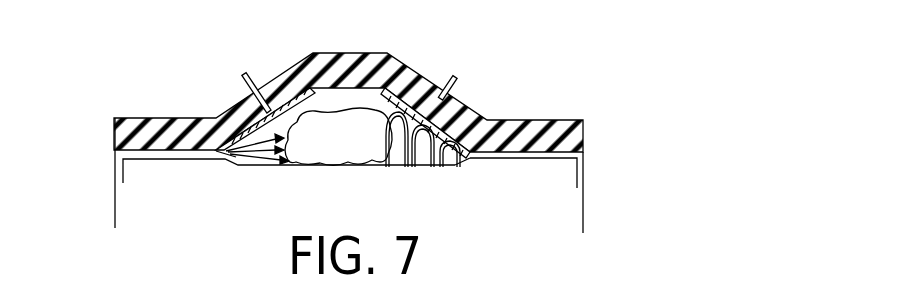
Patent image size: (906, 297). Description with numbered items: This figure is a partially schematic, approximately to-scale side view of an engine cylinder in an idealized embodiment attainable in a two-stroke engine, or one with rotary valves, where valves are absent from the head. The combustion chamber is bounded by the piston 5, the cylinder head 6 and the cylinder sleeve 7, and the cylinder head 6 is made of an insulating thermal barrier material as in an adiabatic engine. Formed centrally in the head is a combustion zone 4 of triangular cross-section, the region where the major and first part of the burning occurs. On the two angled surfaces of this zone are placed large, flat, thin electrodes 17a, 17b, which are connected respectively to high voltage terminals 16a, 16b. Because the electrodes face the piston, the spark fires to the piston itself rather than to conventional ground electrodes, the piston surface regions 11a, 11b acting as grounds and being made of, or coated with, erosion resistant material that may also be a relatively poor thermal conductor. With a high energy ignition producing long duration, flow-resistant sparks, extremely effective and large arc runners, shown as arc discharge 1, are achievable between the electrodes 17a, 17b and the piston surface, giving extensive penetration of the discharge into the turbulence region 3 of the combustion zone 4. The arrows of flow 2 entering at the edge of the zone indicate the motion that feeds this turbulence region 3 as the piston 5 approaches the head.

The arc discharge 1 is at (445, 168).
The combustion flow 2 is at (266, 160).
The turbulence region 3 is at (352, 143).
The combustion zone 4 is at (355, 96).
The piston 5 is at (517, 206).
The cylinder head 6 is at (497, 136).
The cylinder sleeve 7 is at (115, 197).
The ground electrode 11a is at (226, 163).
The ground electrode 11b is at (472, 166).
The high voltage terminal 16a is at (243, 77).
The high voltage terminal 16b is at (457, 78).
The flat thin electrode 17a is at (303, 62).
The flat thin electrode 17b is at (398, 89).